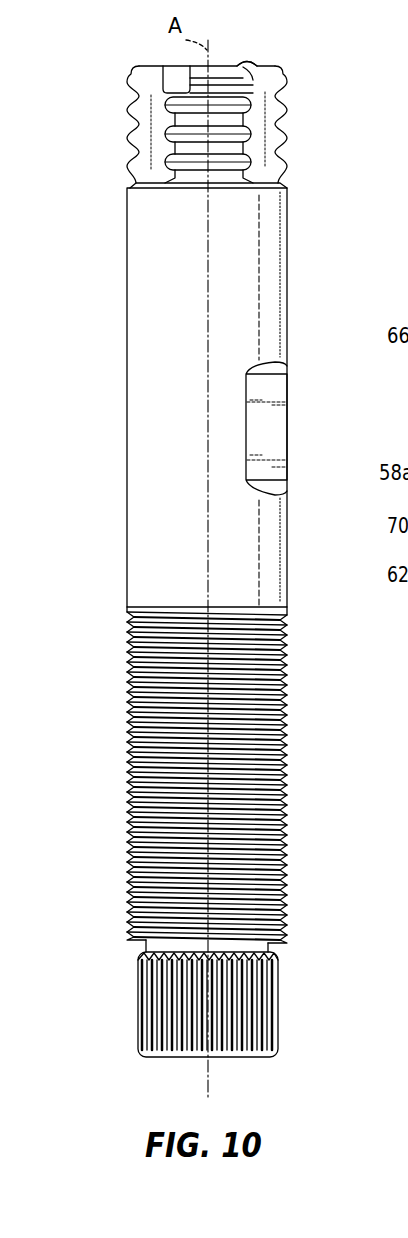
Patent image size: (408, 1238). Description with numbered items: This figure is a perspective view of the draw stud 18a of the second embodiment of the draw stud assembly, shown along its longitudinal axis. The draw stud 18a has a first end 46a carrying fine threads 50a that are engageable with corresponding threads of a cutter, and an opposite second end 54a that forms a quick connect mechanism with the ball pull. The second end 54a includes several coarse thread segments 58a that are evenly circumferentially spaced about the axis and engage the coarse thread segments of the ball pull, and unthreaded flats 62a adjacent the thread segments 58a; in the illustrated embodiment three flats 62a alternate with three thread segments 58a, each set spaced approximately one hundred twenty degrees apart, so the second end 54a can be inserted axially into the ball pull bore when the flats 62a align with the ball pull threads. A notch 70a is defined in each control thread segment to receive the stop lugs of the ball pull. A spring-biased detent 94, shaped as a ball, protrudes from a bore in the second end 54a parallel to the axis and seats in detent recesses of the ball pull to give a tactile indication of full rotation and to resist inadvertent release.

The draw stud 18a is at (103, 340).
The second end 54a is at (300, 96).
The coarse thread segments 58a is at (130, 132).
The flats 62a is at (155, 78).
The notch 70a is at (177, 80).
The detent 94 is at (237, 62).
The first end 46a is at (298, 800).
The fine threads 50a is at (283, 838).